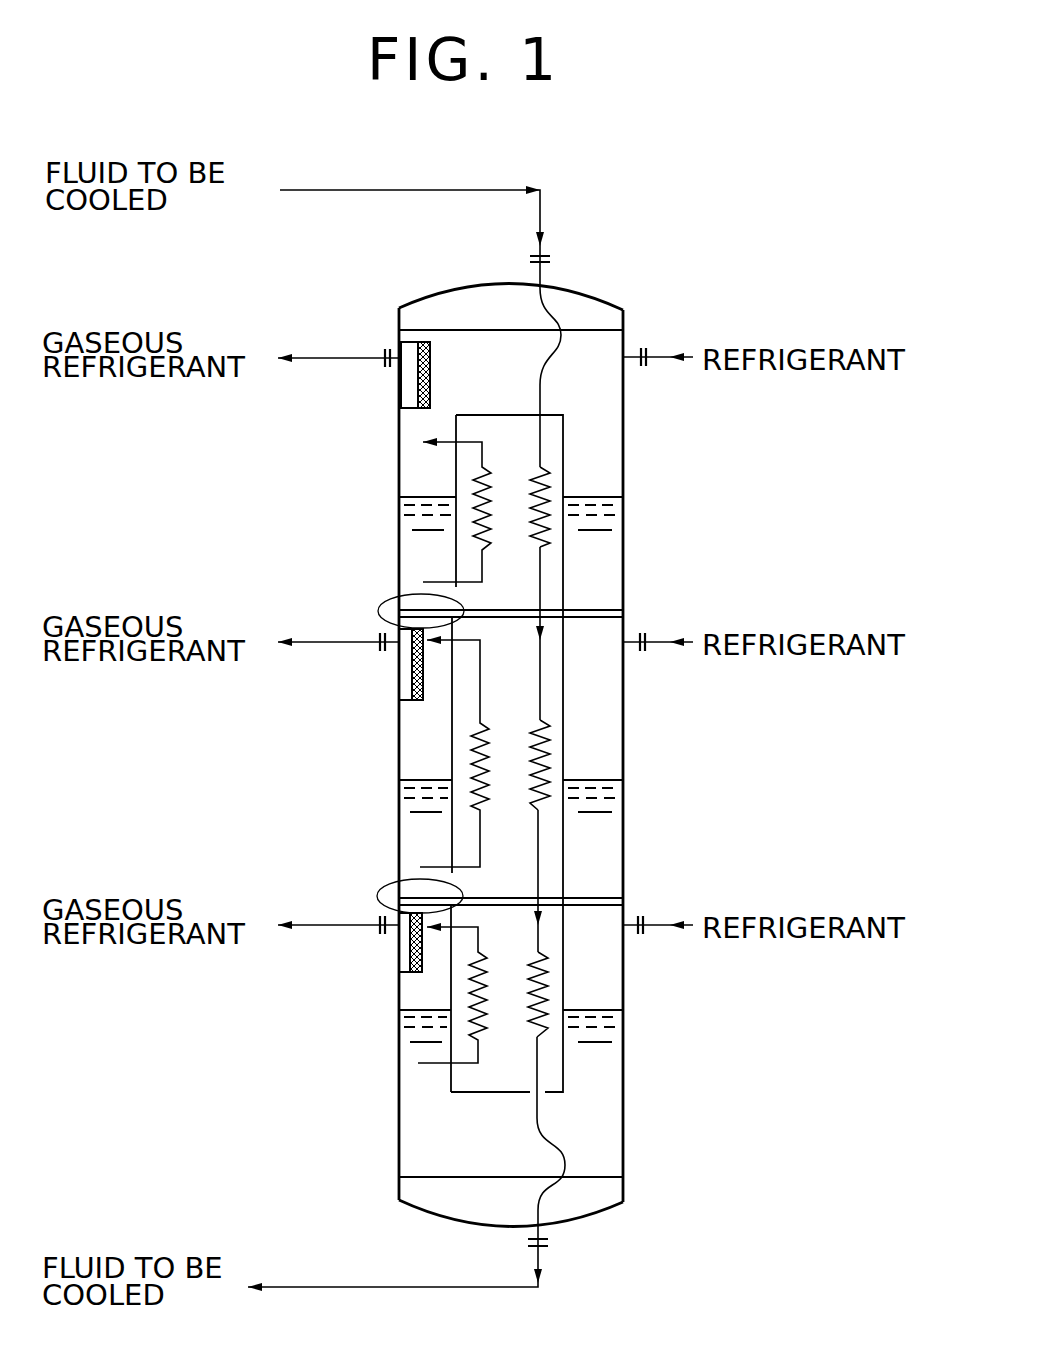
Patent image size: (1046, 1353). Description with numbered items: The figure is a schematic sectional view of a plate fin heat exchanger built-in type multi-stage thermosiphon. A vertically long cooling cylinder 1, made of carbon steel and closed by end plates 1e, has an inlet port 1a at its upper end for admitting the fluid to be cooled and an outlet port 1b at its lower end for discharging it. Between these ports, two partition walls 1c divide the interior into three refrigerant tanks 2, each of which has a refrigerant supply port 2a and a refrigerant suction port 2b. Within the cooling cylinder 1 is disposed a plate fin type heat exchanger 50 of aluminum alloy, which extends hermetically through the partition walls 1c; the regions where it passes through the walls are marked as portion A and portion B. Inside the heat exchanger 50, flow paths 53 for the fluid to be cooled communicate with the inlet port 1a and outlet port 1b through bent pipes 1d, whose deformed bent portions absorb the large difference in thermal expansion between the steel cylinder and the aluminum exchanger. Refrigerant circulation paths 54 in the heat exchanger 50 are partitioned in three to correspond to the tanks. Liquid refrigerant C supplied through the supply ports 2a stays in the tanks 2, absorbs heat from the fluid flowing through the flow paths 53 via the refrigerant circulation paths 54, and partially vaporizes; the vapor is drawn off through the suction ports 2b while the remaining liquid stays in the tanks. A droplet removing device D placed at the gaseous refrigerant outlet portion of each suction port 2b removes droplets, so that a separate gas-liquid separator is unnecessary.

The cooling cylinder 1 is at (296, 498).
The inlet port 1a is at (552, 258).
The outlet port 1b is at (550, 1243).
The partition wall 1c is at (588, 612).
The bent pipe 1d is at (558, 356).
The end plate 1e is at (592, 292).
The refrigerant tank 2 is at (623, 422).
The refrigerant supply port 2a is at (644, 346).
The refrigerant suction port 2b is at (386, 347).
The plate fin type heat exchanger 50 is at (560, 415).
The flow path 53 is at (548, 468).
The refrigerant circulation path 54 is at (474, 480).
The portion A is at (393, 598).
The portion B is at (396, 885).
The refrigerant C is at (412, 537).
The droplet removing device D is at (426, 340).